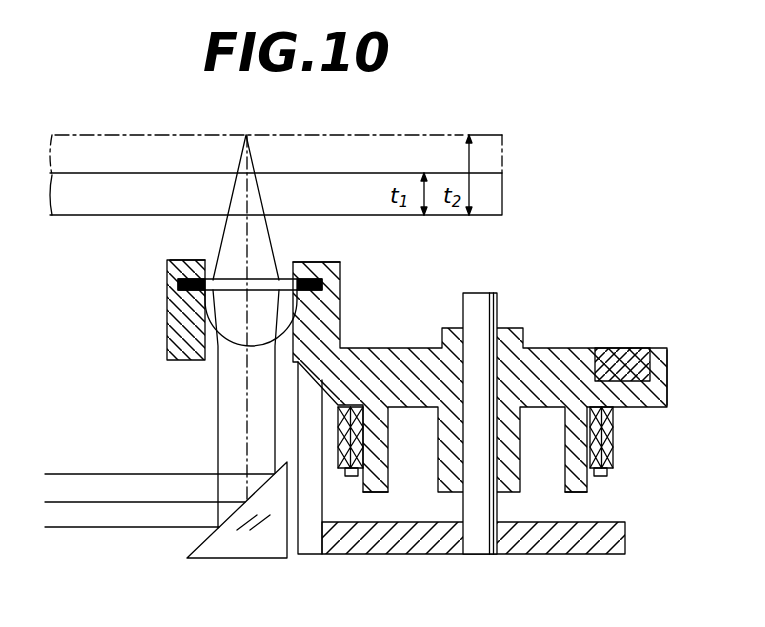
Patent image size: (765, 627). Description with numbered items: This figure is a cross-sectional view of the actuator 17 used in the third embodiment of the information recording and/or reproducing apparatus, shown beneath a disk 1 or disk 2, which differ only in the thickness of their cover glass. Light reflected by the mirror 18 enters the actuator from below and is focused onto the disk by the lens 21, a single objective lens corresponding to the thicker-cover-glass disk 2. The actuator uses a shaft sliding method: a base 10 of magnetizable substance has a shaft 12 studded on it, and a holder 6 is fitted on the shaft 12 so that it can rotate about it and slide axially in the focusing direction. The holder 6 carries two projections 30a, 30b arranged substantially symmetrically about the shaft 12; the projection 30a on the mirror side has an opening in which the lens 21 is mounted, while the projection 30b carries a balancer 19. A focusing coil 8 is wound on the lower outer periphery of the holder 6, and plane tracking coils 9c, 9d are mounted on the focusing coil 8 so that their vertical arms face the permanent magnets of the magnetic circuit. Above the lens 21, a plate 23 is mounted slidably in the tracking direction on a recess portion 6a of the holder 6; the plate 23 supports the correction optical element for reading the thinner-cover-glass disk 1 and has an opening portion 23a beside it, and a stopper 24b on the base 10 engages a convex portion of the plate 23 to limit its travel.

The disk 1 is at (492, 199).
The disk 2 is at (494, 150).
The holder 6 is at (568, 360).
The recess portion 6a is at (193, 264).
The focusing coil 8 is at (593, 476).
The tracking coil 9c is at (352, 477).
The tracking coil 9d is at (613, 435).
The base 10 is at (558, 545).
The shaft 12 is at (479, 542).
The actuator 17 is at (419, 418).
The mirror 18 is at (255, 546).
The balancer 19 is at (633, 355).
The lens 21 is at (230, 312).
The plate 23 is at (322, 283).
The opening portion 23a is at (268, 282).
The stopper 24b is at (307, 475).
The projection 30a is at (176, 350).
The projection 30b is at (668, 388).